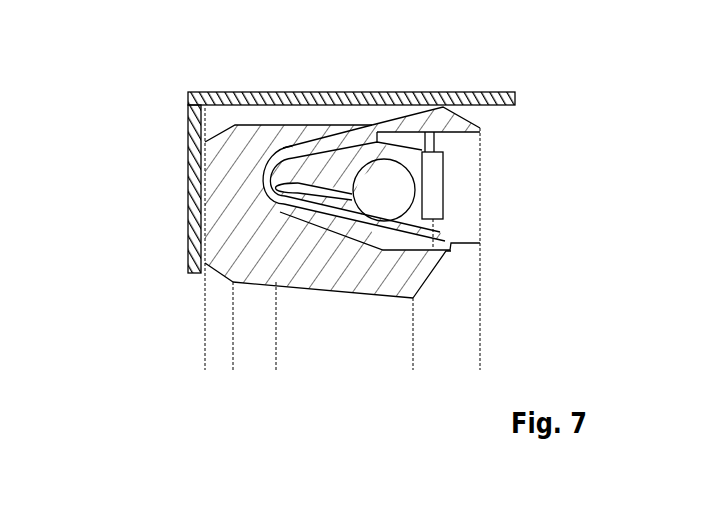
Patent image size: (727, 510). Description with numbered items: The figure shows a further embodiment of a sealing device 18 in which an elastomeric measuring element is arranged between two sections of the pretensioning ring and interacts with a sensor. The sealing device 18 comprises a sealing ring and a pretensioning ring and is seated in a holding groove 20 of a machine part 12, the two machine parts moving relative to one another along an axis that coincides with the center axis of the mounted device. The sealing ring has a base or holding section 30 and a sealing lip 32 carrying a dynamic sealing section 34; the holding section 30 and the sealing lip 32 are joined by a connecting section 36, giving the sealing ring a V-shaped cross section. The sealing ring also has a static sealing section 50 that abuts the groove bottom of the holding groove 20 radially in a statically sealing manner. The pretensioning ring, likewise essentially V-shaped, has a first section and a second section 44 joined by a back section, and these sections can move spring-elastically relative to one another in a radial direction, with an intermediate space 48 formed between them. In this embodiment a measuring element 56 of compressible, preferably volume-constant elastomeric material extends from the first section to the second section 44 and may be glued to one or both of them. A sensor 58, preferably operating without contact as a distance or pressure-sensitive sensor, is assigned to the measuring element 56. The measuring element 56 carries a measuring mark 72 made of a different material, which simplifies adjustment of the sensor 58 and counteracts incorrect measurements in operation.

The machine part 12 is at (345, 92).
The sealing device 18 is at (240, 142).
The holding groove 20 is at (221, 116).
The holding section 30 is at (299, 140).
The sealing lip 32 is at (340, 270).
The sealing section 34 is at (417, 300).
The connecting section 36 is at (242, 184).
The second section 44 is at (272, 194).
The intermediate space 48 is at (325, 204).
The static sealing section 50 is at (443, 107).
The measuring element 56 is at (378, 203).
The sensor 58 is at (433, 183).
The measuring mark 72 is at (428, 213).